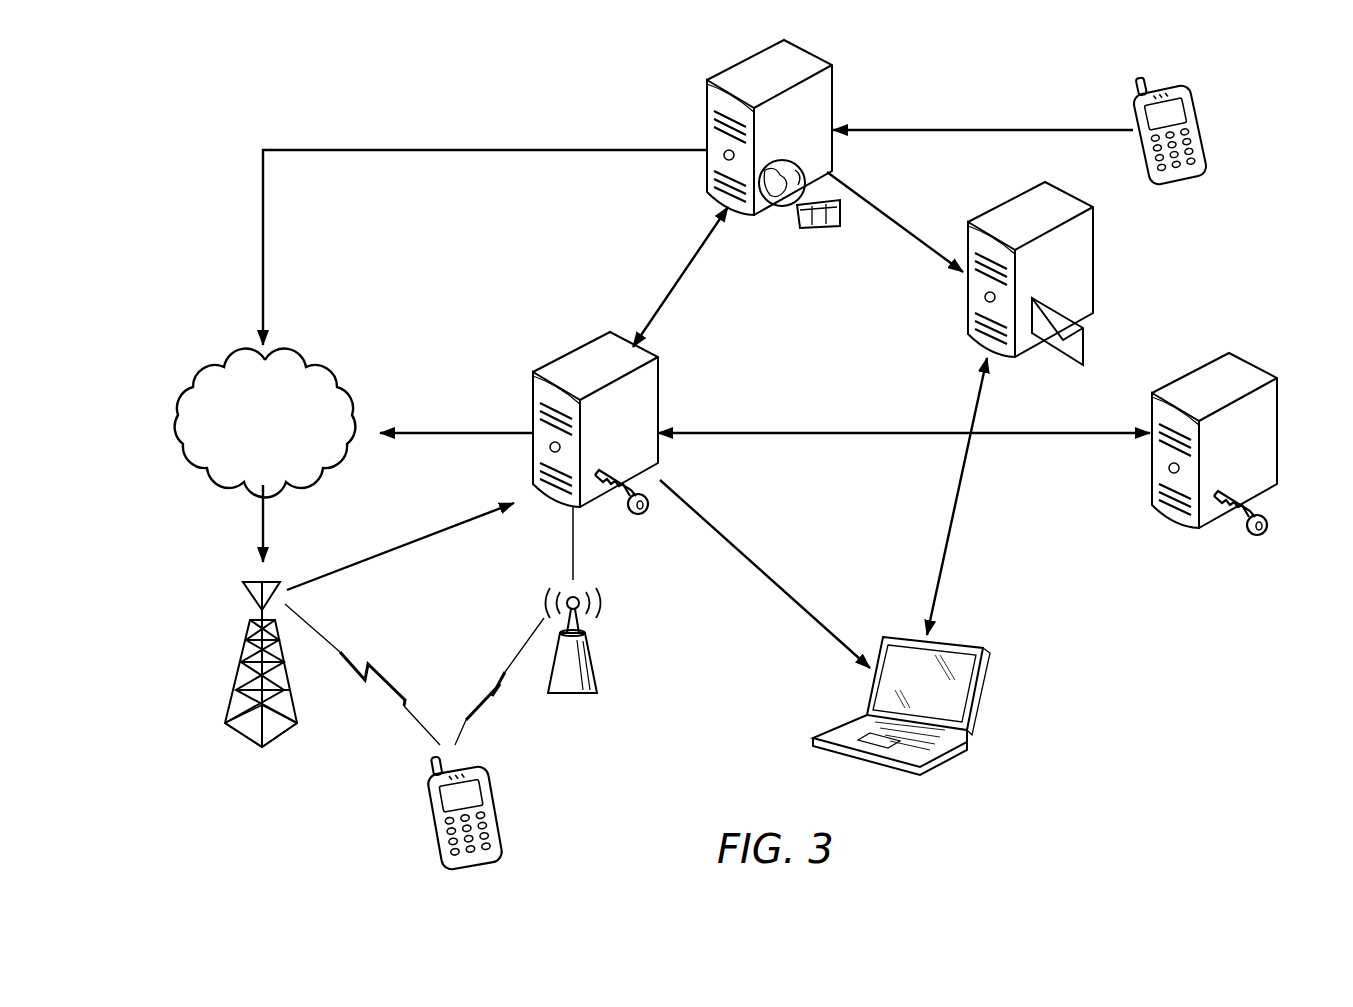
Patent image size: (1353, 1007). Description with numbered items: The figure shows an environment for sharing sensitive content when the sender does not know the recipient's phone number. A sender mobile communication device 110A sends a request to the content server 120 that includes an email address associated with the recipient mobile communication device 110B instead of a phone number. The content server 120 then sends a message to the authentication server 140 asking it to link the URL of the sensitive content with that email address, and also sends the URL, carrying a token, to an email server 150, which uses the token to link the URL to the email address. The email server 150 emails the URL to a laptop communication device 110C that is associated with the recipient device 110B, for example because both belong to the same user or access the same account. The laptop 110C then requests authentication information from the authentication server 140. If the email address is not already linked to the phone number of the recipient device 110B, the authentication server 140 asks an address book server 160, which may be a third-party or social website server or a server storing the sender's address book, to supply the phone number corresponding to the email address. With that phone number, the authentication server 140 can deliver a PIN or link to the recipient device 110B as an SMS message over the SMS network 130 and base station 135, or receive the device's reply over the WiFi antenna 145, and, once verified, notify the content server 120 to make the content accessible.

The sender mobile communication device 110A is at (1208, 124).
The recipient mobile communication device 110B is at (497, 812).
The laptop communication device 110C is at (973, 698).
The content server 120 is at (707, 105).
The SMS network 130 is at (215, 376).
The base station 135 is at (245, 672).
The authentication server 140 is at (560, 370).
The WiFi antenna 145 is at (598, 658).
The email server 150 is at (996, 222).
The address book server 160 is at (1208, 363).